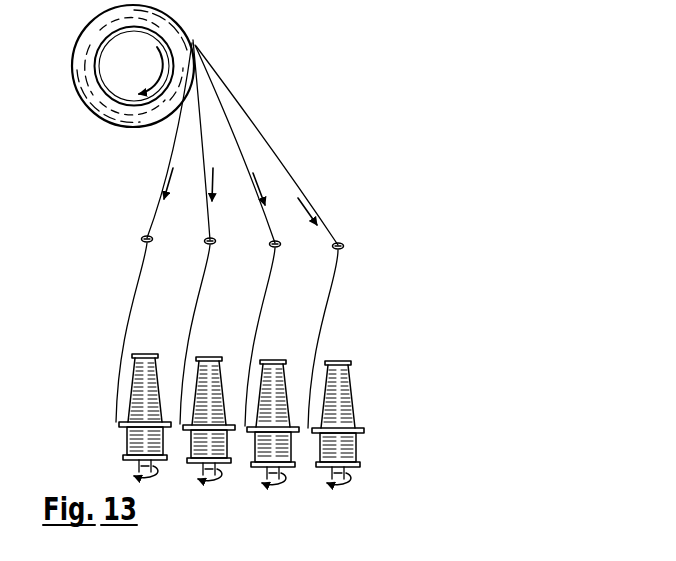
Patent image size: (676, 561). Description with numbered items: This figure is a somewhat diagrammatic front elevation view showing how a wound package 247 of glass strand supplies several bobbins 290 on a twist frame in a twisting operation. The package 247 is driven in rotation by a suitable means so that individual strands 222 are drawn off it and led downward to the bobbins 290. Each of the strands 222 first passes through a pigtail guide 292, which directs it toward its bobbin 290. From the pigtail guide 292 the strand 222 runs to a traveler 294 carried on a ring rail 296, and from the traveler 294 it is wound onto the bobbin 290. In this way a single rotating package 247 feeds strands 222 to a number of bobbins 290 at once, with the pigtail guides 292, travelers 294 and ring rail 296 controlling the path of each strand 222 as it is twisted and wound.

The package 247 is at (106, 119).
The strands 222 is at (200, 117).
The pigtail guide 292 is at (208, 239).
The bobbins 290 is at (173, 327).
The traveler 294 is at (122, 420).
The ring rail 296 is at (128, 437).